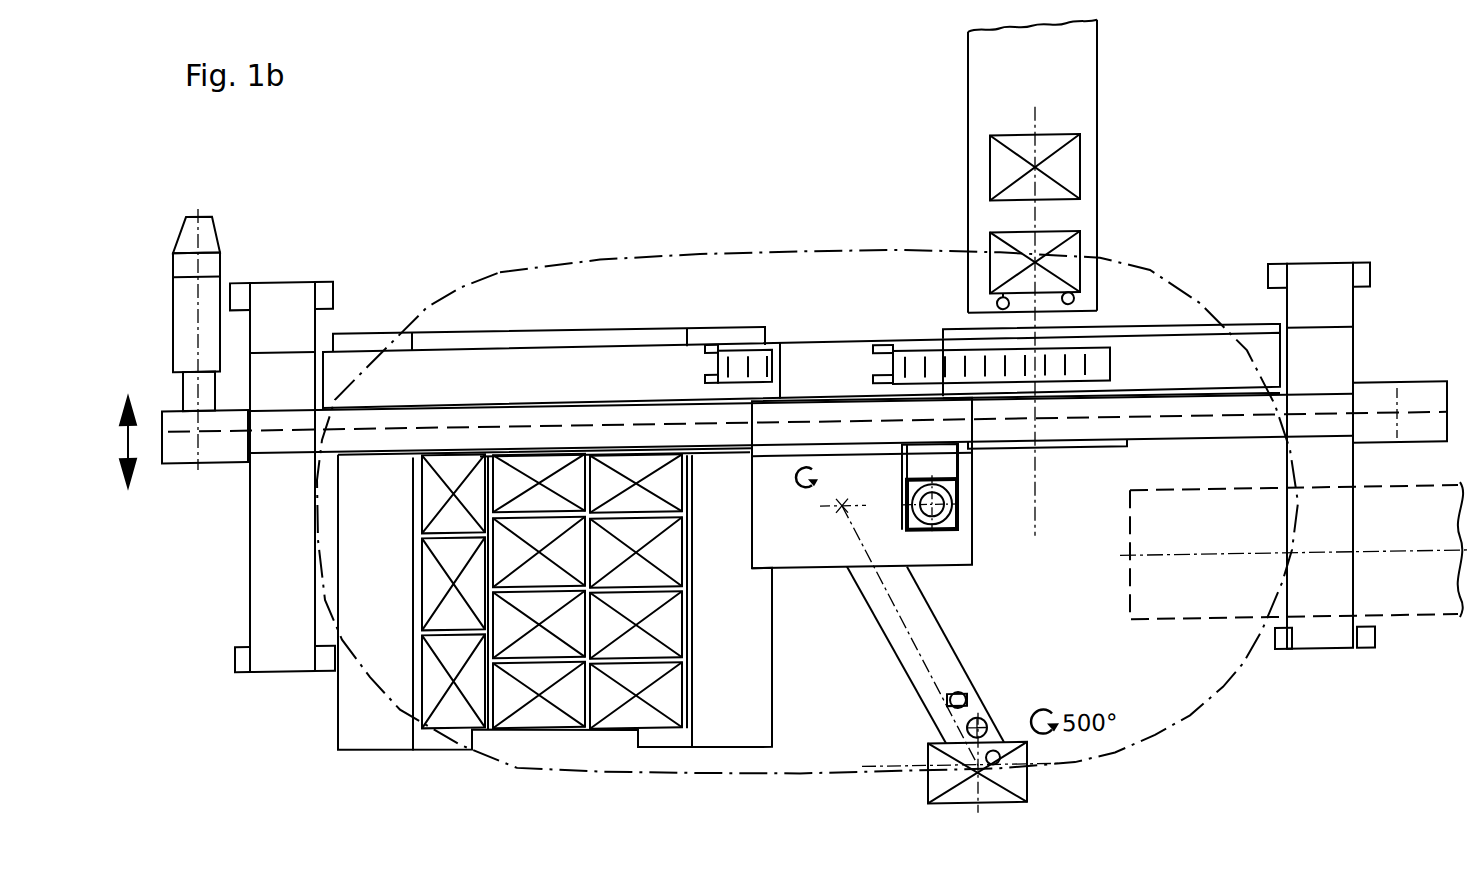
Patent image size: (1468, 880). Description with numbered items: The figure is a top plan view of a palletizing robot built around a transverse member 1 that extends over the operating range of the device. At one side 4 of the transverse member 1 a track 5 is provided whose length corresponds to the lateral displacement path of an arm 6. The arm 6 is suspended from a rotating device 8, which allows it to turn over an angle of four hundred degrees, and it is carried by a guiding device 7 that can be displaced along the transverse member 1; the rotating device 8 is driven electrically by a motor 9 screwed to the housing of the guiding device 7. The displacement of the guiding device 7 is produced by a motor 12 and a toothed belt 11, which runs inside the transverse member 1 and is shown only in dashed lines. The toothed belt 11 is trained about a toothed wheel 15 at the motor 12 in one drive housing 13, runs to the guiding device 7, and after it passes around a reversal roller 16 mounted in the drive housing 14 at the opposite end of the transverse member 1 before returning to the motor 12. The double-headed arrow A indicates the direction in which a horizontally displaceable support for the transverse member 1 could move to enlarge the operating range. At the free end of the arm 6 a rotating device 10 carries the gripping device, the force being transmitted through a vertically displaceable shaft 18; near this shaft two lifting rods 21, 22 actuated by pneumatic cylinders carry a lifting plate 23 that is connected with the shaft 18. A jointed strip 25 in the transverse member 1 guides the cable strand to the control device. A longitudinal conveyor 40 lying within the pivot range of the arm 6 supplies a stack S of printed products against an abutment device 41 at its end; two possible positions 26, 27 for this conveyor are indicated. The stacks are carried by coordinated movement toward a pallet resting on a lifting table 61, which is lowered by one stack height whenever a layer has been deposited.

The transverse member 1 is at (515, 428).
The side of transverse member 4 is at (1237, 456).
The track 5 is at (1103, 463).
The arm 6 is at (942, 655).
The guiding device 7 is at (787, 580).
The rotating device 8 is at (841, 523).
The motor 9 is at (967, 528).
The rotating device 10 is at (958, 743).
The toothed belt 11 is at (445, 437).
The motor 12 is at (205, 246).
The drive housing 13 is at (222, 456).
The drive housing 14 is at (1382, 417).
The toothed wheel 15 is at (197, 440).
The reversal roller 16 is at (1380, 430).
The shaft 18 is at (988, 736).
The lifting rod 21 is at (1017, 779).
The lifting rod 22 is at (960, 710).
The lifting plate 23 is at (987, 803).
The jointed strip 25 is at (1105, 380).
The position of longitudinal conveyor 26 is at (1097, 174).
The position of longitudinal conveyor 27 is at (1395, 639).
The longitudinal conveyor 40 is at (983, 112).
The abutment device 41 is at (1013, 328).
The lifting table 61 is at (727, 745).
The stack S is at (545, 725).
The double-headed arrow A is at (127, 448).